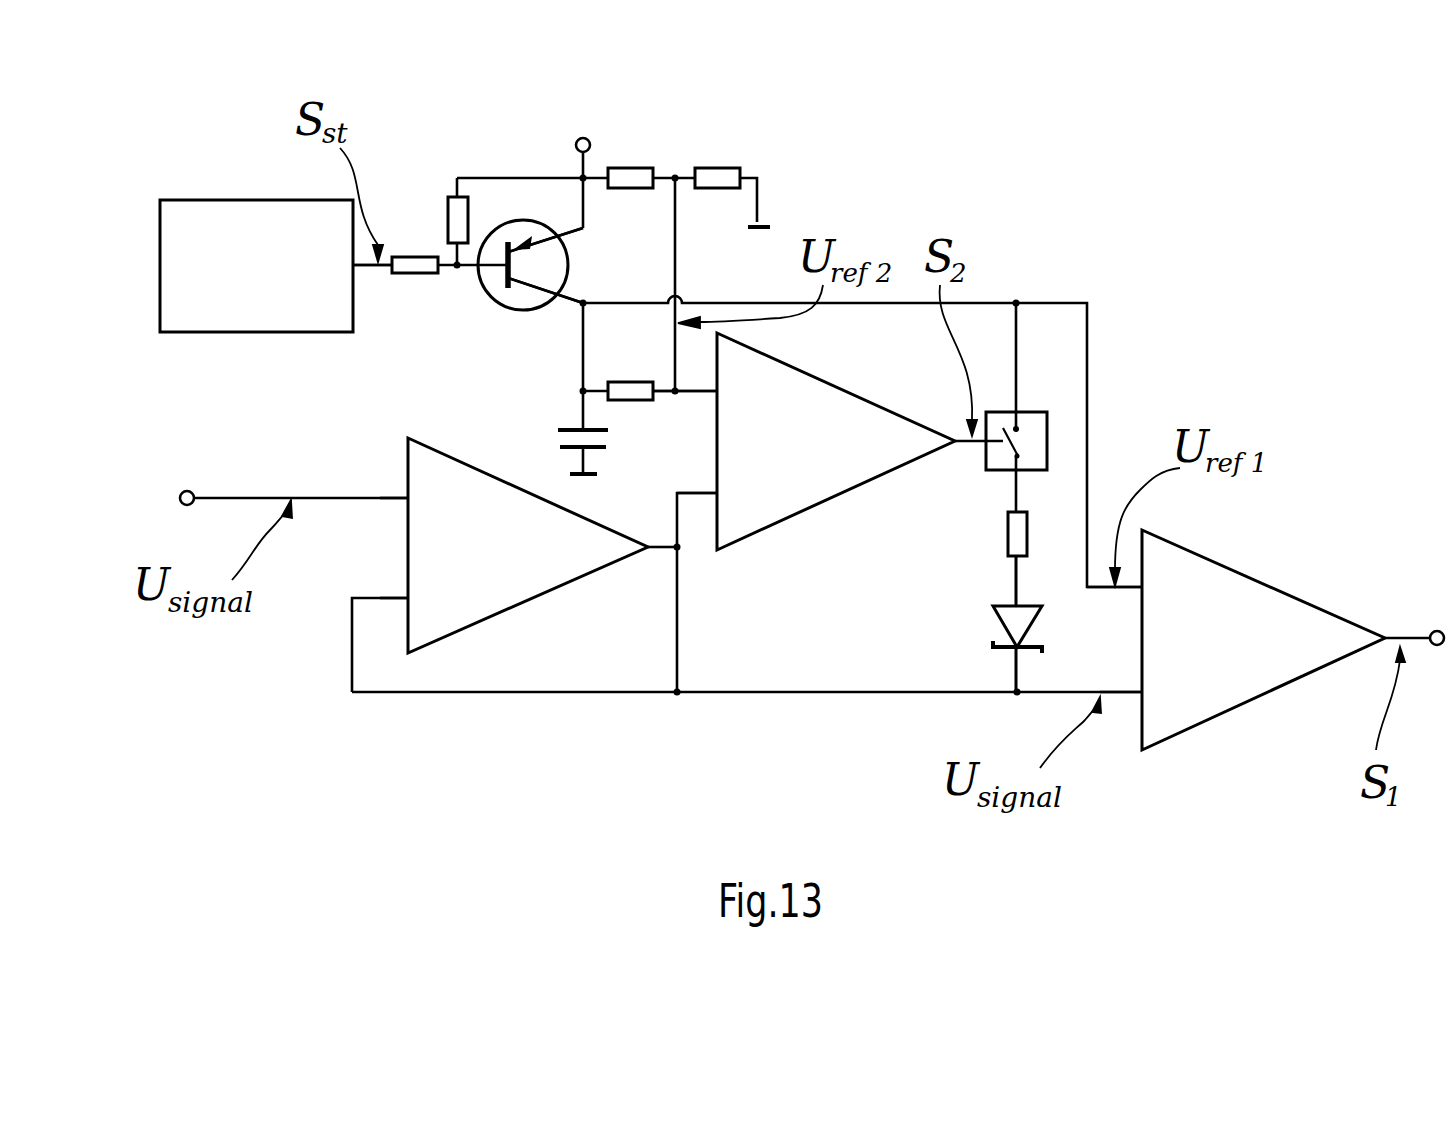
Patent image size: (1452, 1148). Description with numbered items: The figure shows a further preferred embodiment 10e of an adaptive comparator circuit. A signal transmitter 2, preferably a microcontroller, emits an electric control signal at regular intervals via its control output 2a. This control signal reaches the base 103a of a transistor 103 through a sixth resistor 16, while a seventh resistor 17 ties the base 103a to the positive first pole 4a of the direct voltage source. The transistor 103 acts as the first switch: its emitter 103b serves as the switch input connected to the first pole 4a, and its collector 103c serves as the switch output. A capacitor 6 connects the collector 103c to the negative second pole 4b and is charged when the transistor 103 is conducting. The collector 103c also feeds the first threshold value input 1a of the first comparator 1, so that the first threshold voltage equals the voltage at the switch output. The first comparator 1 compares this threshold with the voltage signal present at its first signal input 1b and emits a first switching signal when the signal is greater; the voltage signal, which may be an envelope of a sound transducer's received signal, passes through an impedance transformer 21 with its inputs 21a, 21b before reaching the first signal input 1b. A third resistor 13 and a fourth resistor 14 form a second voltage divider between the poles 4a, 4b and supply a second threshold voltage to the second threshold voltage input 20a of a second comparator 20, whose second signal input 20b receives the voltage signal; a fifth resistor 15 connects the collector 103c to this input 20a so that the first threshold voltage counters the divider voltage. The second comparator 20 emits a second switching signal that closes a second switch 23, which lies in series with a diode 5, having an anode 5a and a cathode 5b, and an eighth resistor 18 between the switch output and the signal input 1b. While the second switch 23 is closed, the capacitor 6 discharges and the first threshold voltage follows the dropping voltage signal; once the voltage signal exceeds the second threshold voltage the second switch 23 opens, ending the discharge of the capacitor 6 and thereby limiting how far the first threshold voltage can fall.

The first comparator 1 is at (1272, 608).
The first threshold value input 1a is at (1138, 590).
The first signal input 1b is at (1138, 690).
The signal transmitter 2 is at (335, 205).
The control output 2a is at (358, 272).
The positive first pole 4a is at (591, 143).
The negative second pole 4b is at (762, 222).
The diode 5 is at (1012, 632).
The anode 5a is at (1014, 600).
The cathode 5b is at (1012, 649).
The capacitor 6 is at (560, 438).
The adaptive comparator circuit 10e is at (897, 222).
The third resistor 13 is at (625, 176).
The fourth resistor 14 is at (715, 176).
The fifth resistor 15 is at (625, 384).
The sixth resistor 16 is at (418, 275).
The seventh resistor 17 is at (455, 218).
The eighth resistor 18 is at (1012, 535).
The second comparator 20 is at (818, 480).
The second threshold voltage input 20a is at (710, 398).
The second signal input 20b is at (712, 491).
The impedance transformer 21 is at (510, 592).
The non-inverting input of impedance transformer 21a is at (405, 502).
The inverting input of impedance transformer 21b is at (405, 596).
The second switch 23 is at (1030, 420).
The transistor 103 is at (525, 232).
The base 103a is at (500, 258).
The emitter 103b is at (568, 265).
The collector 103c is at (528, 300).